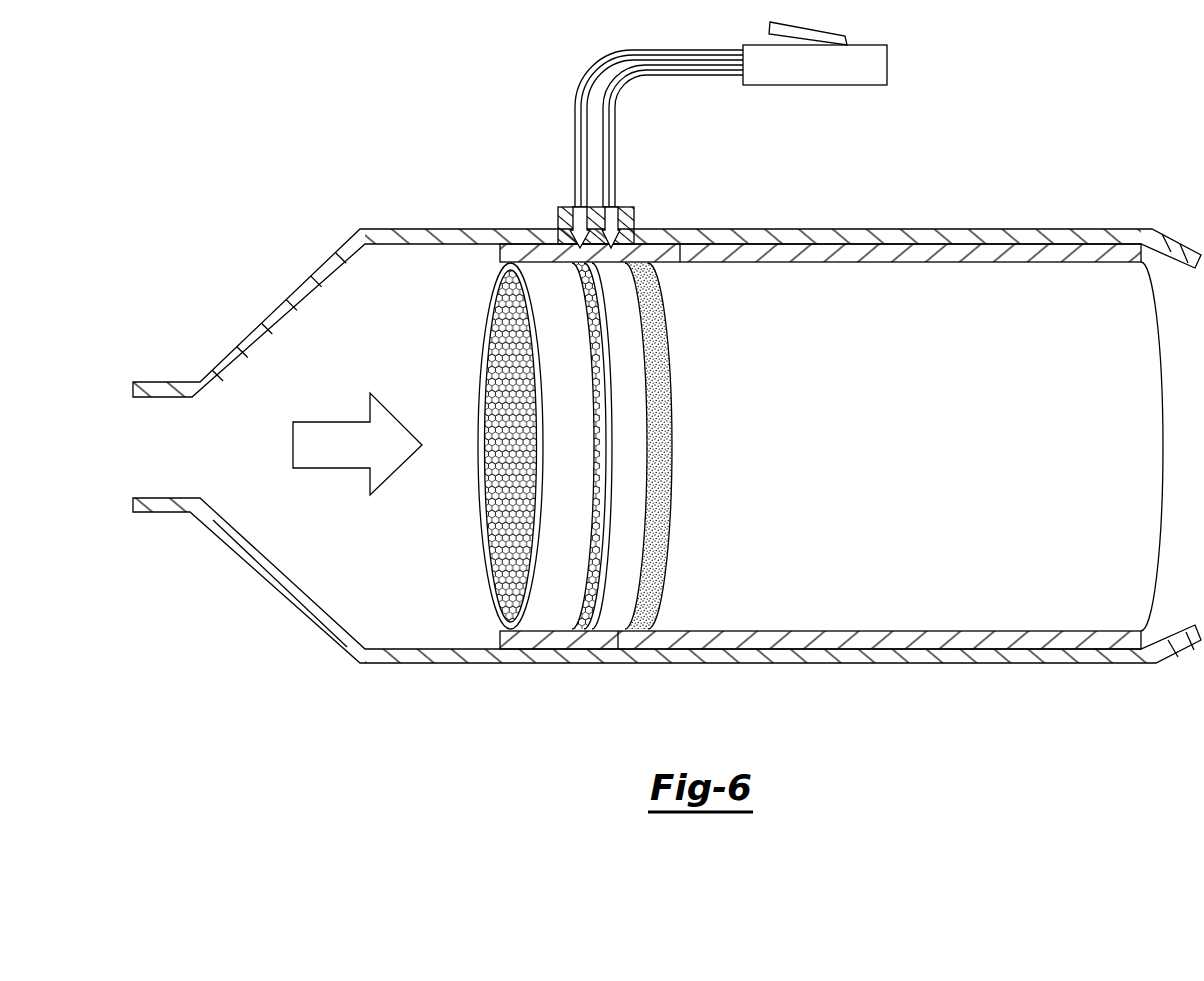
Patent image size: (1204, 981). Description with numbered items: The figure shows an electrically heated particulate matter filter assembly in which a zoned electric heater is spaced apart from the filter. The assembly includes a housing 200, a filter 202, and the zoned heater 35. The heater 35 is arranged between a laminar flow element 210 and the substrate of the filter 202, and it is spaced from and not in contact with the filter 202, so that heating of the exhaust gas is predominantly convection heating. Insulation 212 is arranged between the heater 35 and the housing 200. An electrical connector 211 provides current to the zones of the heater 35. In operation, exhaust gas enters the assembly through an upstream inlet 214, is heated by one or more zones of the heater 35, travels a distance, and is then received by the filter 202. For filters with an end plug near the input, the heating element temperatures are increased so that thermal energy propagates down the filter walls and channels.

The housing 200 is at (817, 229).
The filter 202 is at (828, 456).
The laminar flow element 210 is at (537, 278).
The electrical connector 211 is at (887, 57).
The insulation 212 is at (500, 260).
The upstream inlet 214 is at (158, 447).
The zoned heater 35 is at (503, 496).